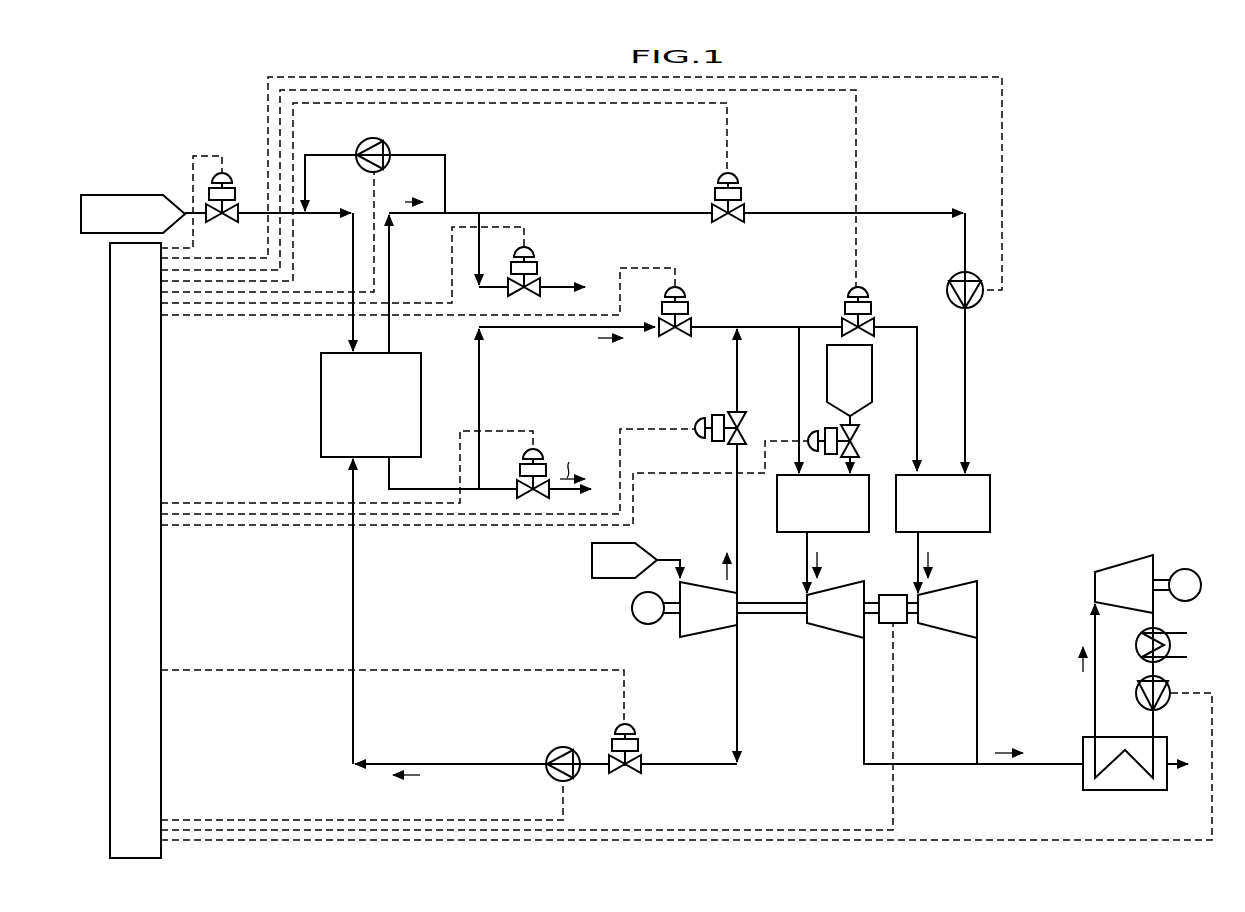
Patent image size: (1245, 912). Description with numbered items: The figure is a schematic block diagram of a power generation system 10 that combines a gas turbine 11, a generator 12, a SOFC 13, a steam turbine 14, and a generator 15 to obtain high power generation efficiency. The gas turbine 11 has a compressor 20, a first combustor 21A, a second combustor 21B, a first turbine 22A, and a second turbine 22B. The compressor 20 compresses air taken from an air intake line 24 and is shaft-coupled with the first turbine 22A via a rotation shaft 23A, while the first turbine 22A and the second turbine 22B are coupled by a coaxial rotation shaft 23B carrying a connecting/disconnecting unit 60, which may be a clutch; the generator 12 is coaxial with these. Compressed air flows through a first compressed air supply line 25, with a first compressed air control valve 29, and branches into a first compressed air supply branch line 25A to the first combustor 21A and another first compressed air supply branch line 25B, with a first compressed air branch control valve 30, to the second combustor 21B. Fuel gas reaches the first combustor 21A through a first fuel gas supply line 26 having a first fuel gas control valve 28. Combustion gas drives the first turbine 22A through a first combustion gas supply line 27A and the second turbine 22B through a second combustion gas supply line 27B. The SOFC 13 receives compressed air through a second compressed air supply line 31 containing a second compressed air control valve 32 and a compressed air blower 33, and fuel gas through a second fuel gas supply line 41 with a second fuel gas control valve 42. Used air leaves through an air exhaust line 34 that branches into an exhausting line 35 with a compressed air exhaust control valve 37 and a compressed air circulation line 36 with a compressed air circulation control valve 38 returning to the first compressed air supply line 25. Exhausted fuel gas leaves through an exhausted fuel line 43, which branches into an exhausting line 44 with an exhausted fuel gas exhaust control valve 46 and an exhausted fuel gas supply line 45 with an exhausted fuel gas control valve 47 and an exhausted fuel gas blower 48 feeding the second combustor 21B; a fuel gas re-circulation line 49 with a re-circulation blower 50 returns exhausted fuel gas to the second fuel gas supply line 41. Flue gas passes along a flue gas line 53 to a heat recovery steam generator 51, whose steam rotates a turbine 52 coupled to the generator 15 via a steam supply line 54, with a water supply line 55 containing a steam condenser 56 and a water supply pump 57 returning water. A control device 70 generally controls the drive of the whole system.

The power generation system 10 is at (648, 467).
The gas turbine 11 is at (816, 511).
The generator 12 is at (646, 626).
The SOFC 13 is at (401, 352).
The steam turbine 14 is at (1134, 664).
The generator 15 is at (1185, 568).
The compressor 20 is at (698, 638).
The first combustor 21A is at (783, 533).
The second combustor 21B is at (991, 490).
The first turbine 22A is at (833, 638).
The second turbine 22B is at (979, 612).
The rotation shaft 23A is at (787, 615).
The rotation shaft 23B is at (920, 626).
The air intake line 24 is at (673, 558).
The first compressed air supply line 25 is at (735, 510).
The first compressed air supply branch line 25A is at (797, 394).
The first compressed air supply branch line 25B is at (917, 392).
The first fuel gas supply line 26 is at (857, 459).
The first combustion gas supply line 27A is at (810, 540).
The second combustion gas supply line 27B is at (921, 540).
The first fuel gas control valve 28 is at (812, 431).
The first compressed air control valve 29 is at (696, 421).
The first compressed air branch control valve 30 is at (866, 284).
The second compressed air supply line 31 is at (508, 767).
The second compressed air control valve 32 is at (630, 726).
The compressed air blower 33 is at (563, 747).
The air exhaust line 34 is at (388, 489).
The exhausting line 35 is at (500, 487).
The compressed air circulation line 36 is at (555, 329).
The compressed air exhaust control valve 37 is at (539, 448).
The compressed air circulation control valve 38 is at (682, 287).
The second fuel gas supply line 41 is at (249, 214).
The second fuel gas control valve 42 is at (224, 173).
The exhausted fuel line 43 is at (426, 215).
The exhausting line 44 is at (565, 285).
The exhausted fuel gas supply line 45 is at (647, 213).
The exhausted fuel gas exhaust control valve 46 is at (530, 248).
The exhausted fuel gas control valve 47 is at (733, 176).
The exhausted fuel gas blower 48 is at (978, 305).
The fuel gas re-circulation line 49 is at (443, 155).
The re-circulation blower 50 is at (373, 139).
The heat recovery steam generator 51 is at (1123, 792).
The turbine 52 is at (1093, 590).
The flue gas line 53 is at (993, 767).
The steam supply line 54 is at (1093, 712).
The water supply line 55 is at (1155, 724).
The steam condenser 56 is at (1166, 632).
The water supply pump 57 is at (1167, 681).
The connecting/disconnecting unit 60 is at (893, 594).
The control device 70 is at (162, 598).